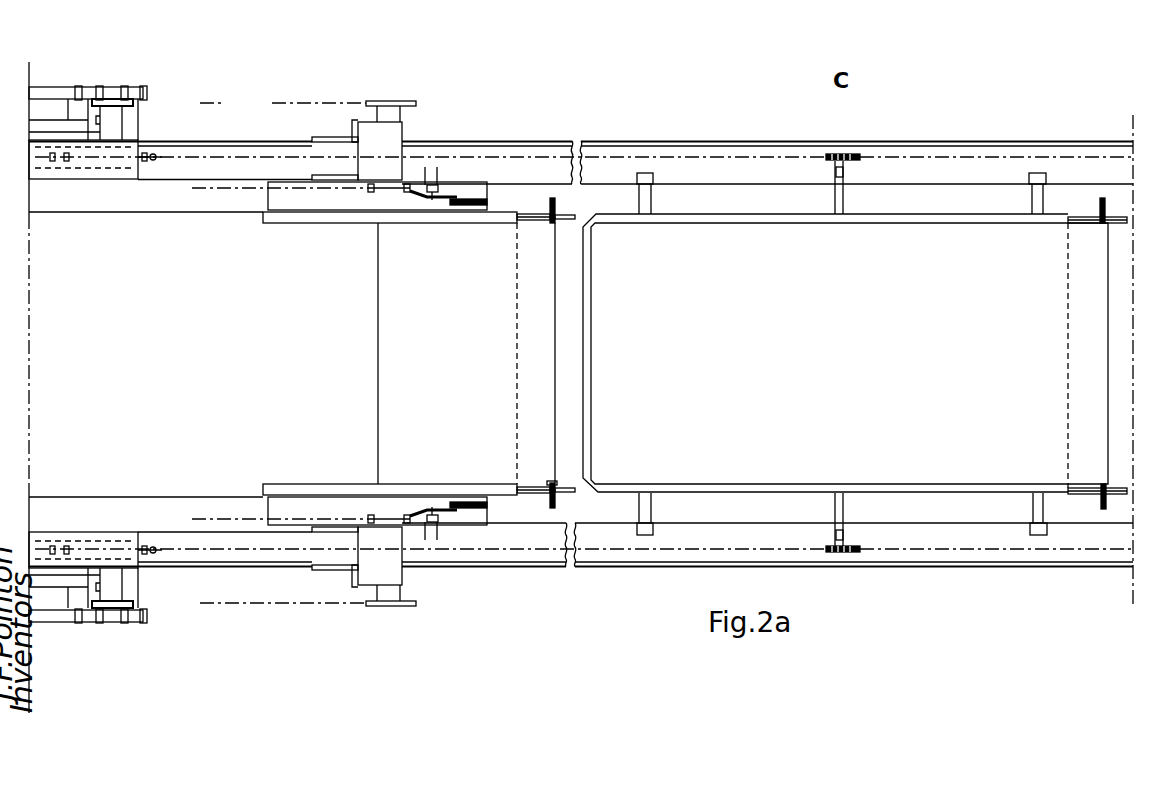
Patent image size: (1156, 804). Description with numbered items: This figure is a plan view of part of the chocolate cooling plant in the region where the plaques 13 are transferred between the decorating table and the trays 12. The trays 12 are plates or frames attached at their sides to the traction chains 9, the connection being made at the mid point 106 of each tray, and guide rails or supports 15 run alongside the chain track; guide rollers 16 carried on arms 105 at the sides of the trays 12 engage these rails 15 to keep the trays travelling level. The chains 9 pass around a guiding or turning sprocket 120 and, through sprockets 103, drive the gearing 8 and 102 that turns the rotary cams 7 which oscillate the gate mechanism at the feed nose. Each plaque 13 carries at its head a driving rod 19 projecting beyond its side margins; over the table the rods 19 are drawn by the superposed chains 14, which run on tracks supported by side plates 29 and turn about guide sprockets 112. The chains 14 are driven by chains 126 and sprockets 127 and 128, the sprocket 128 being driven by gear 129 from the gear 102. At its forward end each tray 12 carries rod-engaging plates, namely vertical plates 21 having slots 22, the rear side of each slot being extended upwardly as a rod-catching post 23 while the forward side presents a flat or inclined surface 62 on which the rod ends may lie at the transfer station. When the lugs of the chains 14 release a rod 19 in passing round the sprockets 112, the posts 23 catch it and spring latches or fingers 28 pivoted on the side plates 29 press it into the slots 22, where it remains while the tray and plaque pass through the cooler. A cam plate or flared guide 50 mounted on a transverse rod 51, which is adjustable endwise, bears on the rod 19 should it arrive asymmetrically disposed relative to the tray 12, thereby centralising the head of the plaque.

The rotary cams 7 is at (42, 125).
The gearing 8 is at (68, 87).
The tray chains 9 is at (180, 157).
The trays 12 is at (458, 225).
The plaques 13 is at (757, 228).
The superposed chains 14 is at (237, 190).
The guide rails 15 is at (925, 173).
The guide rollers 16 is at (648, 173).
The driving rod 19 is at (550, 198).
The vertical plates 21 is at (528, 213).
The slots 22 is at (558, 494).
The rod-catching post 23 is at (548, 482).
The spring latches 28 is at (468, 205).
The side plates 29 is at (395, 210).
The cam plate 50 is at (418, 200).
The transverse rod 51 is at (437, 200).
The flat or inclined surface 62 is at (573, 216).
The gear 102 is at (82, 87).
The sprockets 103 is at (145, 158).
The arms 105 is at (643, 210).
The mid point 106 is at (843, 195).
The guide sprockets 112 is at (382, 190).
The turning sprocket 120 is at (37, 175).
The chains 126 is at (290, 612).
The sprocket 127 is at (395, 94).
The sprocket 128 is at (120, 105).
The gear 129 is at (112, 91).